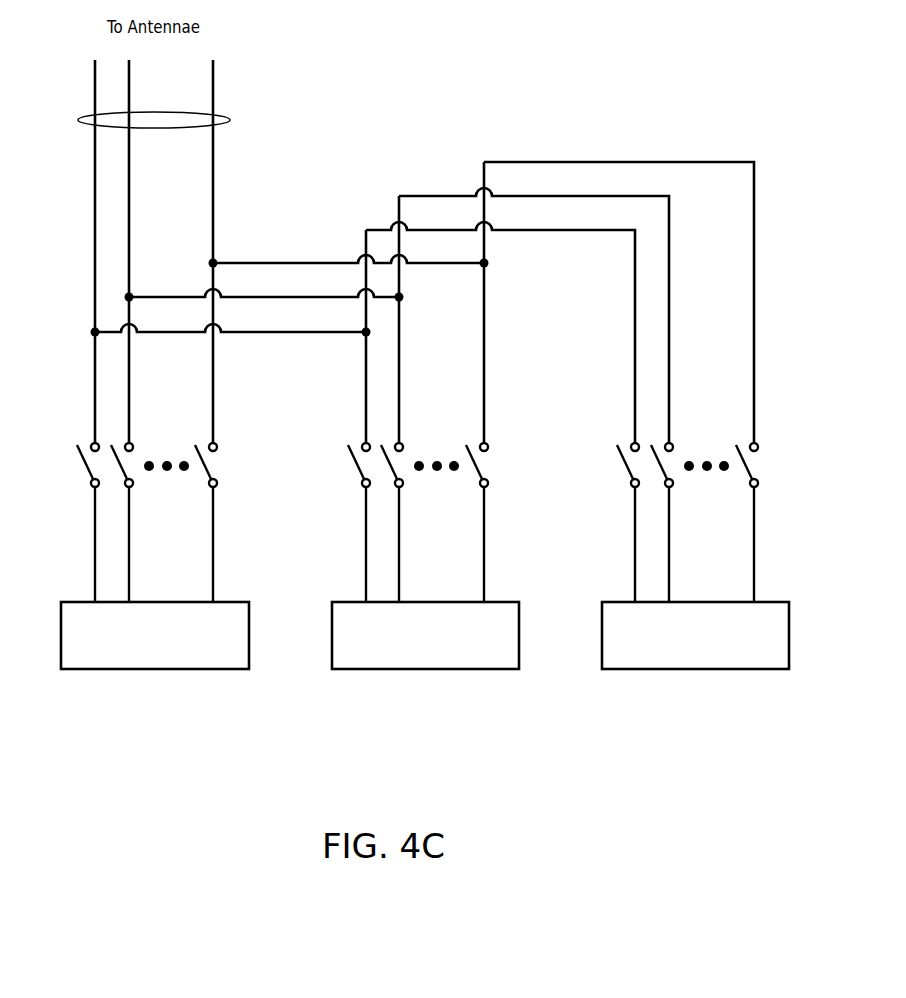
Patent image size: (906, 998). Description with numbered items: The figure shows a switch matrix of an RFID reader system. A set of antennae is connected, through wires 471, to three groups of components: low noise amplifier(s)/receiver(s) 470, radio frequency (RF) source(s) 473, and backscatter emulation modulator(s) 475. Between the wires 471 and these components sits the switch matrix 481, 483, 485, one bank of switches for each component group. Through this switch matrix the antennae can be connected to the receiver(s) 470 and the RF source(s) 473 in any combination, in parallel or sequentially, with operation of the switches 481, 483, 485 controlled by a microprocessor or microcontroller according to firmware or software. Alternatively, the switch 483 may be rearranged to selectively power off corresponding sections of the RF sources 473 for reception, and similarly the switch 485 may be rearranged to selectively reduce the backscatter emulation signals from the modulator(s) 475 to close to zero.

The wires 471 is at (230, 120).
The switch matrix switches 481 is at (235, 470).
The switch 483 is at (505, 470).
The switch 485 is at (778, 470).
The low noise amplifier(s)/receiver(s) 470 is at (193, 669).
The radio frequency (RF) source(s) 473 is at (498, 669).
The backscatter emulation modulator(s) 475 is at (767, 669).